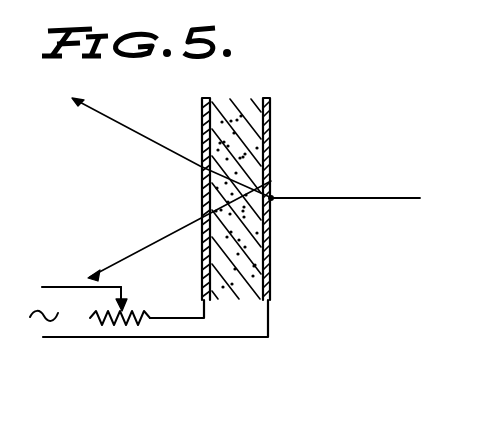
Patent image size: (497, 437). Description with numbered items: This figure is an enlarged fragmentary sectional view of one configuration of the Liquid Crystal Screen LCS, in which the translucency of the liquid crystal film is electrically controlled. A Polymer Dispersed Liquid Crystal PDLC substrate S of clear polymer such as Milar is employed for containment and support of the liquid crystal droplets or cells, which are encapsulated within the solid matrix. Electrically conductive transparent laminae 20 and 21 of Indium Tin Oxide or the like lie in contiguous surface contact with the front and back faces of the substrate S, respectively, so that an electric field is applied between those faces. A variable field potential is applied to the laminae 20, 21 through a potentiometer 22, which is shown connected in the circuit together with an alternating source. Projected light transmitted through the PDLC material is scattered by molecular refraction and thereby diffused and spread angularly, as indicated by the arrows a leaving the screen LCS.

The electrically conductive transparent lamina 20 is at (201, 120).
The electrically conductive transparent lamina 21 is at (271, 122).
The potentiometer 22 is at (139, 311).
The PDLC substrate S is at (272, 159).
The Polymer Dispersed Liquid Crystal PDLC is at (272, 234).
The Liquid Crystal Screen LCS is at (186, 203).
The arrows a is at (148, 246).